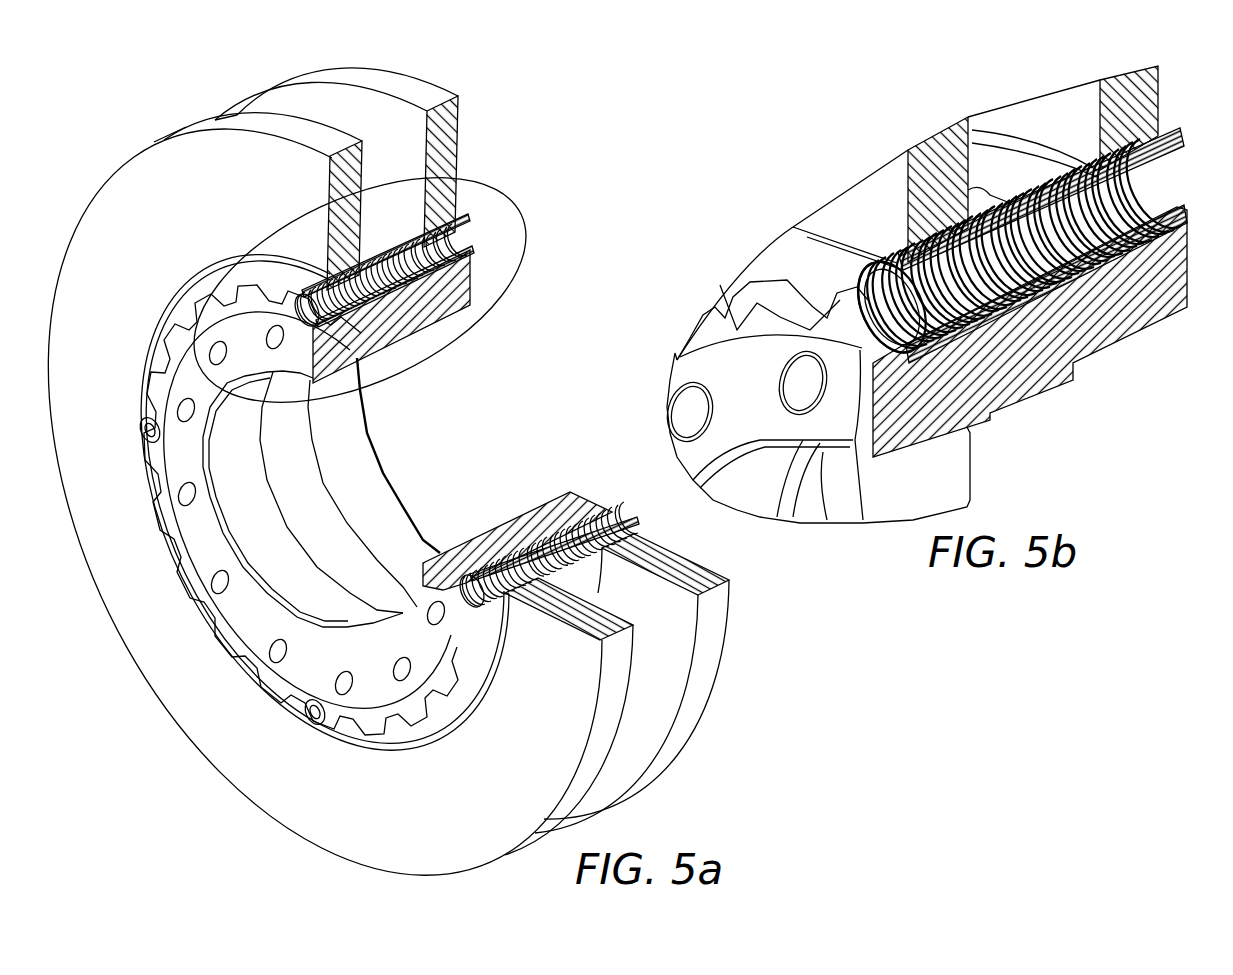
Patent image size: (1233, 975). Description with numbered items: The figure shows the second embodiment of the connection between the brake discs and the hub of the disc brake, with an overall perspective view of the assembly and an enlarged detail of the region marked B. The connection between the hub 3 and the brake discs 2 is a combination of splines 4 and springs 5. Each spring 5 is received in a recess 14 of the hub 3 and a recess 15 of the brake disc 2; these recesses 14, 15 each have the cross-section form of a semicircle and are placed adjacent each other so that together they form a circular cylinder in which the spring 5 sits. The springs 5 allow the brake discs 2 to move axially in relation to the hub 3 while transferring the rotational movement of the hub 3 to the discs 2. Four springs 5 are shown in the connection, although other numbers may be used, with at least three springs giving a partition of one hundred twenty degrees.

In FIG. 5A, the brake discs 2 is at (690, 722).
In FIG. 5B, the brake discs 2 is at (903, 151).
In FIG. 5A, the hub 3 is at (568, 490).
In FIG. 5B, the hub 3 is at (1130, 324).
In FIG. 5A, the splines 4 is at (418, 552).
In FIG. 5B, the splines 4 is at (752, 313).
In FIG. 5A, the springs 5 is at (627, 517).
In FIG. 5B, the springs 5 is at (1176, 176).
In FIG. 5B, the recess of the hub 14 is at (828, 522).
In FIG. 5B, the recess of the brake disc 15 is at (793, 230).
In FIG. 5A, the detail region B is at (508, 305).